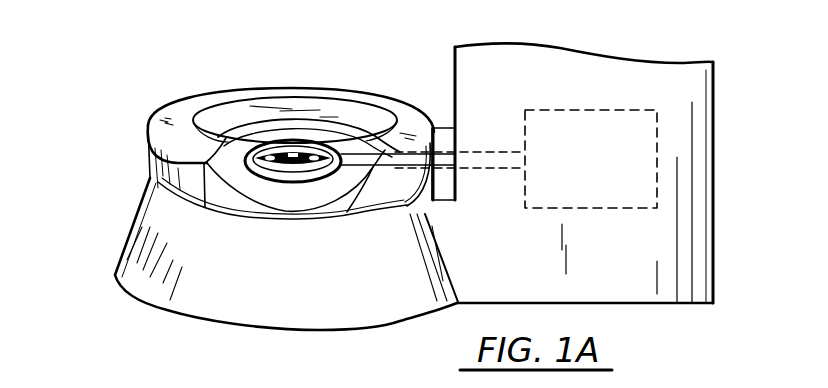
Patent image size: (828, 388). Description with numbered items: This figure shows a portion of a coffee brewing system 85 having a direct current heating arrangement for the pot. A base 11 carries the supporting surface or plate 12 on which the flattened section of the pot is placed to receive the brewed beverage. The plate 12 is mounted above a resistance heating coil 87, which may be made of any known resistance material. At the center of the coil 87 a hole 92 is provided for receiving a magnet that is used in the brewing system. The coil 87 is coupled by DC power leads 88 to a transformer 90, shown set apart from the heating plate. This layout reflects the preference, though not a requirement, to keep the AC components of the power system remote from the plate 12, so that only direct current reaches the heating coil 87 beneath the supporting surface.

The coffee brewing system 85 is at (138, 106).
The base 11 is at (160, 173).
The supporting surface 12 is at (260, 112).
The hole 92 is at (207, 198).
The resistance heating coil 87 is at (293, 183).
The DC power leads 88 is at (492, 166).
The transformer 90 is at (657, 142).